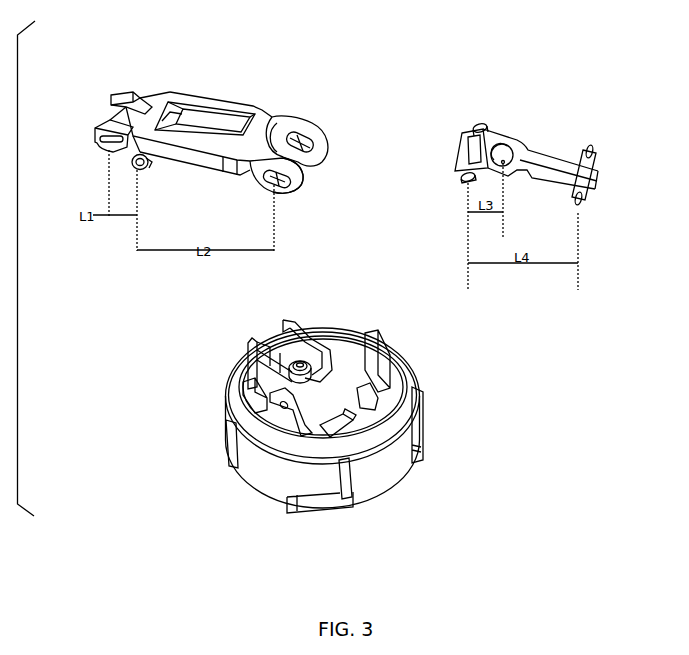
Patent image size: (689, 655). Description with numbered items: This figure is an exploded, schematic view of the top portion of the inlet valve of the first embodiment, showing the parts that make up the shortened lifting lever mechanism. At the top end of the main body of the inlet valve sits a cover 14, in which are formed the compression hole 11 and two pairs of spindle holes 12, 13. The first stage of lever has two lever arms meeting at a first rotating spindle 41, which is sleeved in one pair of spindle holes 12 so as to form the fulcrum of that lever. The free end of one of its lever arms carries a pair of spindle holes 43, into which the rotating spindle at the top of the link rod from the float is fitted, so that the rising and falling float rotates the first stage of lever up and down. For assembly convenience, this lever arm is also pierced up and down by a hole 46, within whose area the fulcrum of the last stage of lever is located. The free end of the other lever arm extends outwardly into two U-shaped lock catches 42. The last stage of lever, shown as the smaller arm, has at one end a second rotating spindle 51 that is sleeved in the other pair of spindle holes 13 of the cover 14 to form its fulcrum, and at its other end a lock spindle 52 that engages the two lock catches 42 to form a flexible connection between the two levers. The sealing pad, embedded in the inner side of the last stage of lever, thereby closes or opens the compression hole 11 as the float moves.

The hole 46 is at (213, 131).
The lock catches 42 is at (103, 120).
The first rotating spindle 41 is at (148, 166).
The spindle holes 43 is at (287, 187).
The second rotating spindle 51 is at (482, 125).
The lock spindle 52 is at (593, 157).
The compression hole 11 is at (297, 362).
The spindle holes 12 is at (257, 413).
The spindle holes 13 is at (252, 360).
The cover 14 is at (273, 458).